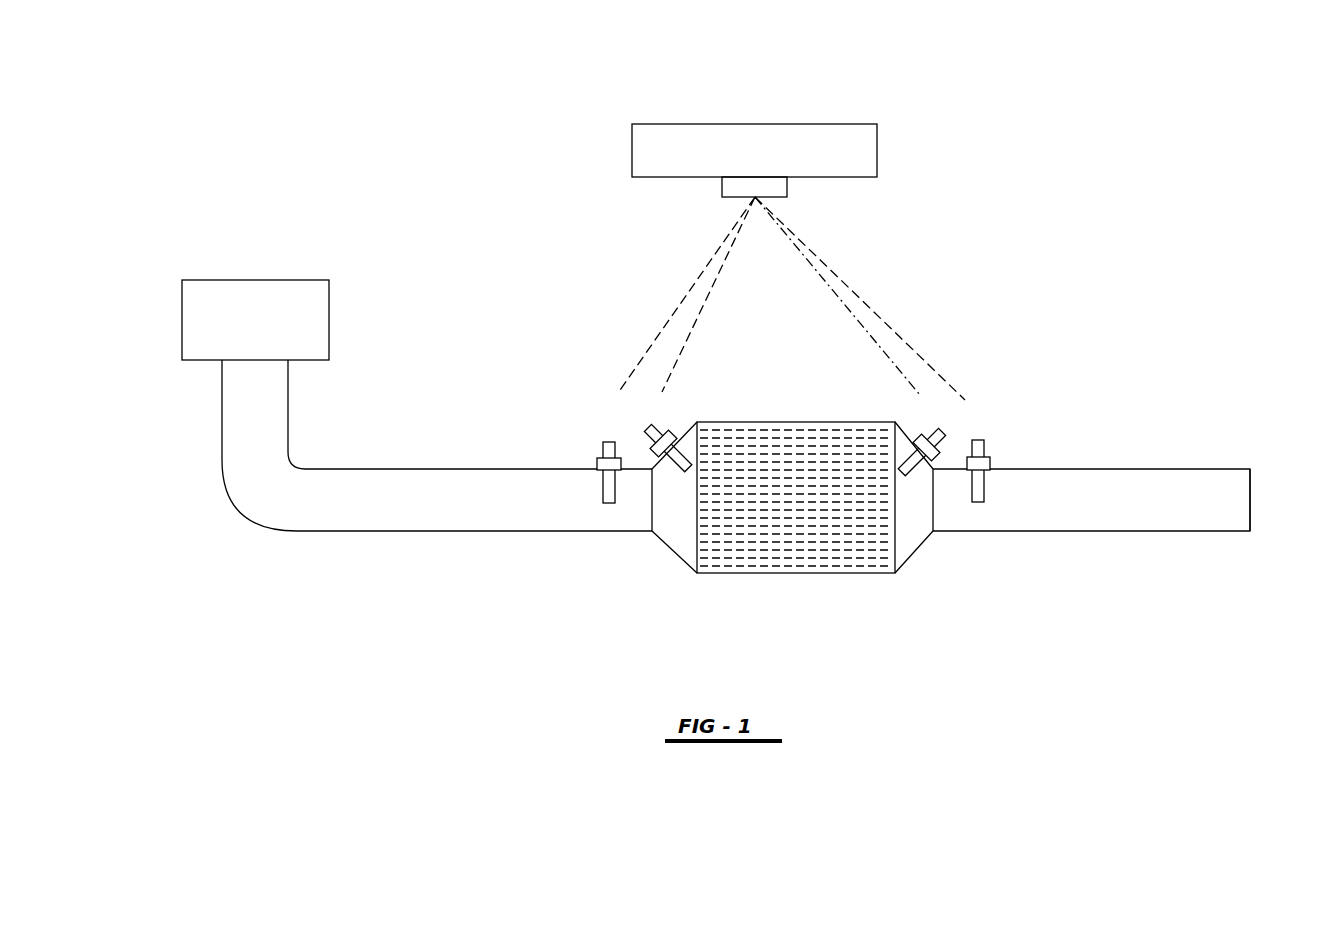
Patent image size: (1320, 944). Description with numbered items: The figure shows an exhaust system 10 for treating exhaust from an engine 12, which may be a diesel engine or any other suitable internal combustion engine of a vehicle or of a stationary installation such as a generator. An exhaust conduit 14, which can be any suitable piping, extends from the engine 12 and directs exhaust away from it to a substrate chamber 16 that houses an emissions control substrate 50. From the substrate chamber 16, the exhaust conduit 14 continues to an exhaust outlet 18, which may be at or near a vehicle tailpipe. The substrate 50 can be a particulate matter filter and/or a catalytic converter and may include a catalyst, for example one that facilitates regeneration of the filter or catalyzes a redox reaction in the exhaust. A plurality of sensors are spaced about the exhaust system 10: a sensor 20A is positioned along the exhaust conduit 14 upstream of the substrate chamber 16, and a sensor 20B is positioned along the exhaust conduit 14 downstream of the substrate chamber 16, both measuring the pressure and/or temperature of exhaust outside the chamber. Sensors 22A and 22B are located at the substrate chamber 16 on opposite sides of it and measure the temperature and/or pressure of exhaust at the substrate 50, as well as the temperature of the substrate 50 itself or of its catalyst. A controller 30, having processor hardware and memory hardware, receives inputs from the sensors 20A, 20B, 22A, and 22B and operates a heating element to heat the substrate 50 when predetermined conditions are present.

The exhaust system 10 is at (362, 130).
The engine 12 is at (245, 280).
The exhaust conduit 14 is at (258, 482).
The substrate chamber 16 is at (735, 575).
The exhaust outlet 18 is at (1250, 503).
The sensor 20A is at (597, 452).
The sensor 20B is at (985, 447).
The sensor 22A is at (662, 430).
The sensor 22B is at (926, 432).
The controller 30 is at (737, 124).
The emissions control substrate 50 is at (758, 520).